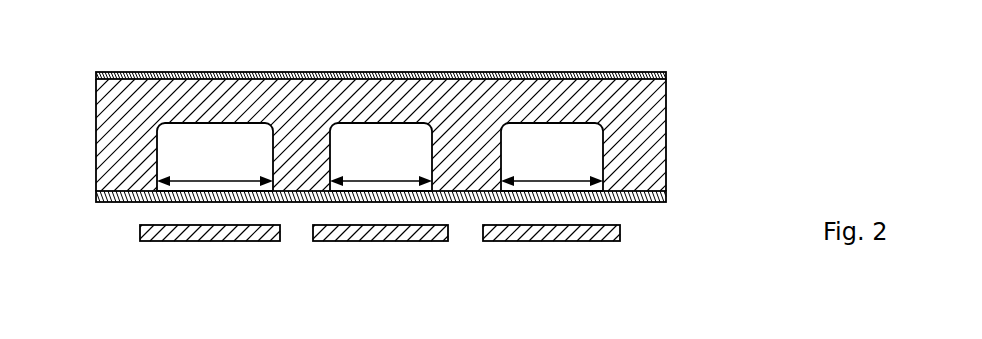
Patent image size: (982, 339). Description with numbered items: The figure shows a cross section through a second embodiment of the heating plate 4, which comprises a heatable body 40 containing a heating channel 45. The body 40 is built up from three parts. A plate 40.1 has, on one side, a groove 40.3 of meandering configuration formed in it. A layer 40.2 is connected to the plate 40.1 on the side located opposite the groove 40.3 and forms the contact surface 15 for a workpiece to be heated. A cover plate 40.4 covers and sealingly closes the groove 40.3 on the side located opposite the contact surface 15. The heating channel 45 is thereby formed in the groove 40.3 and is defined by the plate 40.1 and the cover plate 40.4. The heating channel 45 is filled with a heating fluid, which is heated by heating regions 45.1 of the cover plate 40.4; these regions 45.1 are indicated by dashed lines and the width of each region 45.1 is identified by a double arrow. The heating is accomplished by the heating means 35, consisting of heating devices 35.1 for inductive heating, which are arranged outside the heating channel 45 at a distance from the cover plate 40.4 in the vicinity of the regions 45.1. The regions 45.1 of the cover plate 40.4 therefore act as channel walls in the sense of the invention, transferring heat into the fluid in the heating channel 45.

The heating plate 4 is at (648, 38).
The heatable body 40 is at (96, 60).
The contact surface 15 is at (367, 72).
The plate 40.1 is at (649, 104).
The layer 40.2 is at (666, 74).
The groove 40.3 is at (157, 172).
The cover plate 40.4 is at (661, 193).
The heating channel 45 is at (199, 157).
The regions of the cover plate 45.1 is at (165, 196).
The heating means 35 is at (612, 249).
The heating devices for inductive heating 35.1 is at (208, 242).